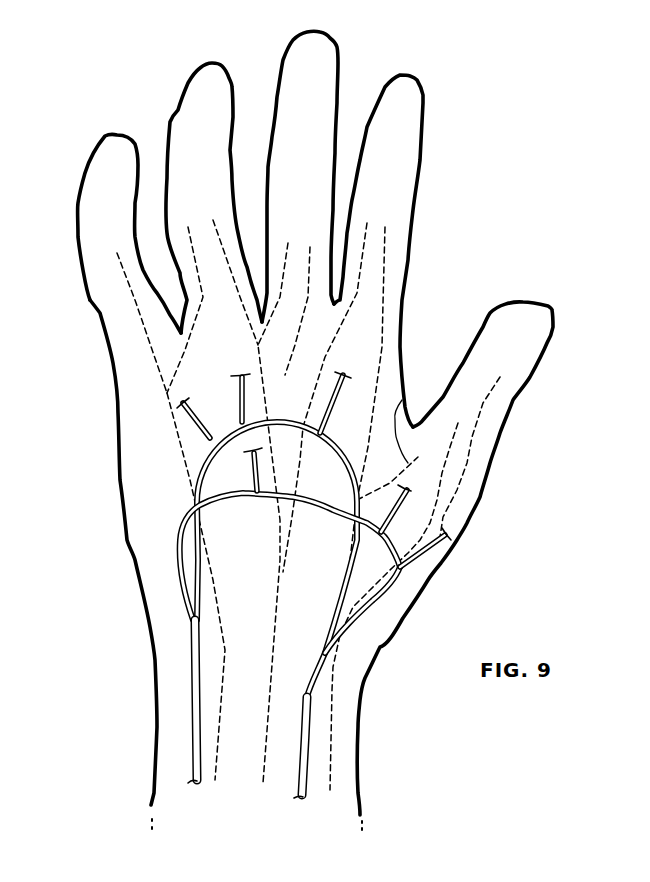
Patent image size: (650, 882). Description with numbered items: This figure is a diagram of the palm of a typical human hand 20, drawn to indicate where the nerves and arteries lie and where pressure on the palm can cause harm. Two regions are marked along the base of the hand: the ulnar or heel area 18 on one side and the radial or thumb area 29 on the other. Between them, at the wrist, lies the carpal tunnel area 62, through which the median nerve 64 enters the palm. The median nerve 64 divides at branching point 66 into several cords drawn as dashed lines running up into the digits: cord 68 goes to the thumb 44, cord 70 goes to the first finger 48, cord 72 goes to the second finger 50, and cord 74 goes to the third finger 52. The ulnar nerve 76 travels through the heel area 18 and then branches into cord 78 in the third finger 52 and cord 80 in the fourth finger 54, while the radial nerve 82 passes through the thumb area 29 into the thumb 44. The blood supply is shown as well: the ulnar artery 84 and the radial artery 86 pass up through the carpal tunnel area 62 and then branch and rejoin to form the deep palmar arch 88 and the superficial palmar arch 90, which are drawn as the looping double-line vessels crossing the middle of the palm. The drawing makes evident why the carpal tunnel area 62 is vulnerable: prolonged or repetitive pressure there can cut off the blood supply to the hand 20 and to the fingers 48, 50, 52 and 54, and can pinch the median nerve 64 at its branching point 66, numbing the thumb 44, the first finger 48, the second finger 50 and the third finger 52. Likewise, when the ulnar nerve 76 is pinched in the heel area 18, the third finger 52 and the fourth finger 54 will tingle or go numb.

The ulnar or heel area 18 is at (150, 537).
The hand 20 is at (96, 377).
The radial or thumb area 29 is at (420, 556).
The thumb 44 is at (525, 313).
The first finger 48 is at (407, 90).
The second finger 50 is at (322, 40).
The third finger 52 is at (203, 67).
The fourth finger 54 is at (117, 147).
The carpal tunnel area 62 is at (250, 553).
The median nerve 64 is at (270, 703).
The branching point 66 is at (288, 570).
The cord 68 is at (403, 402).
The cord 70 is at (383, 277).
The cord 72 is at (307, 330).
The cord 74 is at (220, 250).
The ulnar nerve 76 is at (227, 650).
The cord 78 is at (197, 325).
The cord 80 is at (150, 333).
The radial nerve 82 is at (332, 697).
The ulnar artery 84 is at (187, 658).
The radial artery 86 is at (310, 727).
The deep palmar arch 88 is at (223, 507).
The superficial palmar arch 90 is at (327, 448).